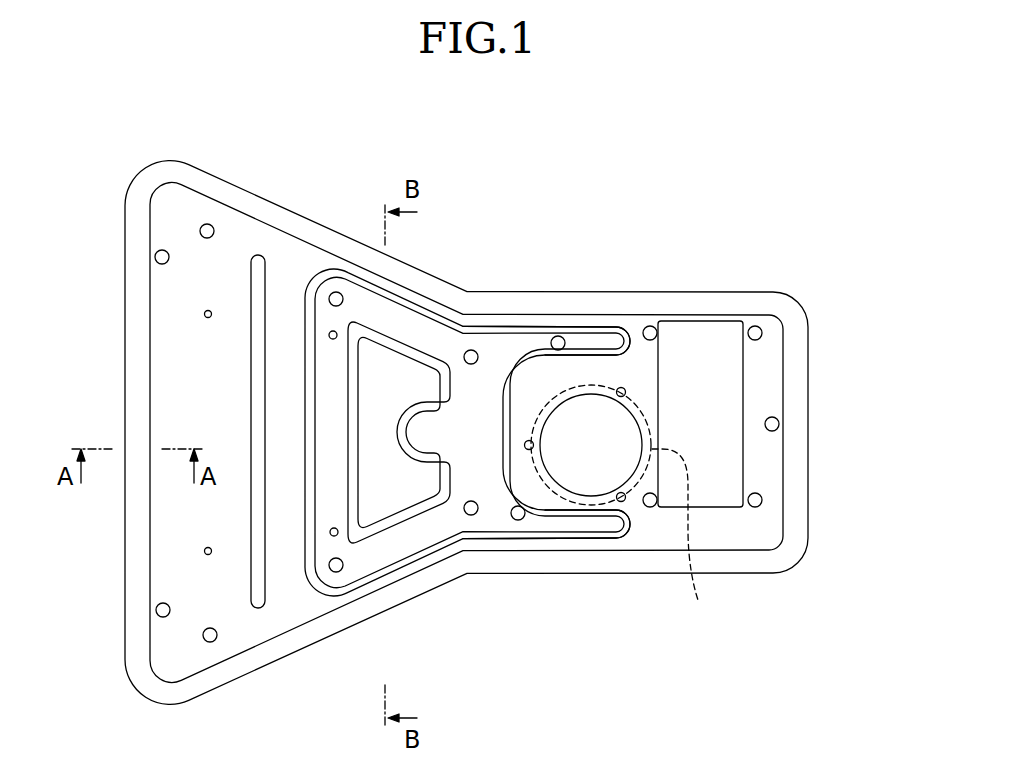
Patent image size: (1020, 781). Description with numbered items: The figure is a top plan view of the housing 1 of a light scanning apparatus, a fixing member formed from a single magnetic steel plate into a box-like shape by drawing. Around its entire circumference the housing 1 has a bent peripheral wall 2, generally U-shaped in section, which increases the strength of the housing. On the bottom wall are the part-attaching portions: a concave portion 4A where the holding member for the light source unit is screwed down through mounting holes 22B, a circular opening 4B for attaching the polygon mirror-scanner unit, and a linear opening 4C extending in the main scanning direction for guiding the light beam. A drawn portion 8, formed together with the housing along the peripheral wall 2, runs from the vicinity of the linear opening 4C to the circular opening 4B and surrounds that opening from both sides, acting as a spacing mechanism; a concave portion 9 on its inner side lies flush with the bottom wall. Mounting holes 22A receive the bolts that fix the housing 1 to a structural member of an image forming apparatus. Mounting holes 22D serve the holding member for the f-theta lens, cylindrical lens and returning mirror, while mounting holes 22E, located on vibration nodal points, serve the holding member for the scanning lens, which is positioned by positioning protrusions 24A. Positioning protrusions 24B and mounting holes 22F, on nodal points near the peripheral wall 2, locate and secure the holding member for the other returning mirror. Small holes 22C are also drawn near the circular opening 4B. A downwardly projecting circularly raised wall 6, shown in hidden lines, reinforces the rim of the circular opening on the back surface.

The housing 1 is at (731, 266).
The peripheral wall 2 is at (555, 572).
The concave portion 4A is at (735, 366).
The circular opening 4B is at (630, 433).
The linear opening 4C is at (258, 521).
The circularly raised wall 6 is at (682, 534).
The drawn portion 8 is at (521, 327).
The concave portion 9 is at (404, 510).
The mounting holes 22A is at (158, 257).
The mounting holes 22B is at (650, 327).
The small hole 22C is at (621, 388).
The mounting holes 22D is at (471, 352).
The mounting holes 22E is at (336, 295).
The mounting holes 22F is at (207, 228).
The positioning protrusions 24A is at (333, 331).
The positioning protrusions 24B is at (205, 314).